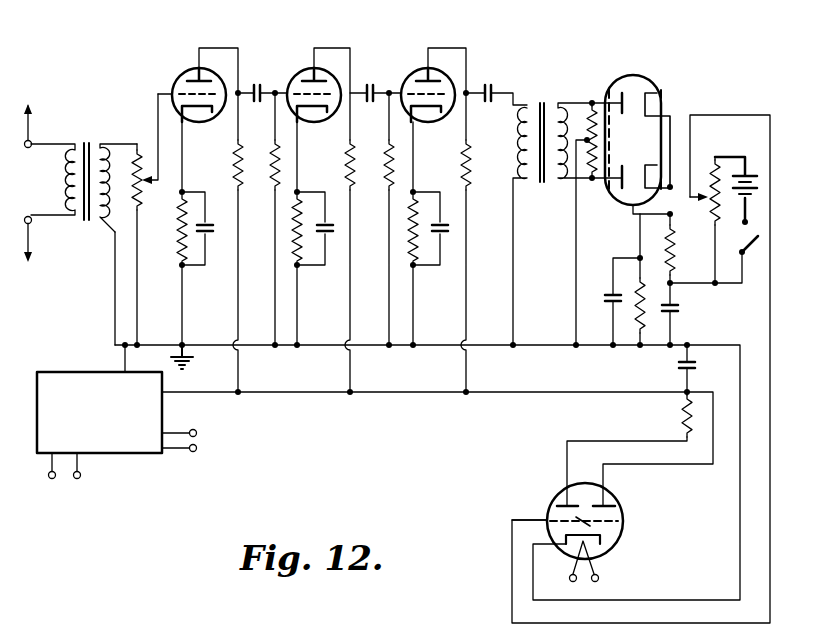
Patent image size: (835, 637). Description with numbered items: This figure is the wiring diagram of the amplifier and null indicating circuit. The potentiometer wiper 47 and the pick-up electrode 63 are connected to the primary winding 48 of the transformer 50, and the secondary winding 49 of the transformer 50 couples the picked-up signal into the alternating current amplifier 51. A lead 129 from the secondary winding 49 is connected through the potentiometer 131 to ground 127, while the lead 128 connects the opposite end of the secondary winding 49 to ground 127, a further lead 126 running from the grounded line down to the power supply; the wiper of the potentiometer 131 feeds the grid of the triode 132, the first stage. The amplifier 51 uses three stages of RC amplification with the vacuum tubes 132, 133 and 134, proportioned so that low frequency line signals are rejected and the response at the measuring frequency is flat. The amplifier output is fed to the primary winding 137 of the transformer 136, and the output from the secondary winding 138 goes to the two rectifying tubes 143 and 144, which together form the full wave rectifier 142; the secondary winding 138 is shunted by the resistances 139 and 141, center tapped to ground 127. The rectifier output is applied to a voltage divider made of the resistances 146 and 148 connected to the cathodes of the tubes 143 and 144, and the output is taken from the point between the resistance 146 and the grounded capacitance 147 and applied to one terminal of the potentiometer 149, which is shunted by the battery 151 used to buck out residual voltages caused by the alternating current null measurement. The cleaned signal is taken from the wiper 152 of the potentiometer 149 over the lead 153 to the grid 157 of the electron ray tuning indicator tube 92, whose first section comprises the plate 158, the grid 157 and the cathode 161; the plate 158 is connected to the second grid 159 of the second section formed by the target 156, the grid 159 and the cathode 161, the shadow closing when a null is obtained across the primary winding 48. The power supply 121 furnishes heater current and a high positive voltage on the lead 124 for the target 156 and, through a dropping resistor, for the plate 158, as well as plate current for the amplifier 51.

The potentiometer wiper 47 is at (30, 129).
The primary winding 48 is at (70, 176).
The secondary winding 49 is at (103, 222).
The transformer 50 is at (95, 124).
The alternating current amplifier 51 is at (257, 43).
The pick-up electrode 63 is at (32, 245).
The electron ray tuning indicator tube 92 is at (556, 482).
The power supply 121 is at (118, 464).
The lead 124 is at (210, 396).
The ground lead 126 is at (125, 359).
The ground 127 is at (193, 365).
The lead 128 is at (115, 313).
The lead 129 is at (111, 144).
The potentiometer 131 is at (139, 197).
The triode 132 is at (178, 81).
The vacuum tube 133 is at (308, 70).
The vacuum tube 134 is at (414, 70).
The transformer 136 is at (544, 96).
The primary winding 137 is at (520, 145).
The secondary winding 138 is at (564, 180).
The resistance 139 is at (609, 90).
The resistance 141 is at (601, 180).
The full wave rectifier 142 is at (658, 170).
The rectifying tube 143 is at (664, 104).
The rectifying tube 144 is at (632, 218).
The resistance 146 is at (674, 285).
The capacitance 147 is at (680, 310).
The resistance 148 is at (638, 335).
The potentiometer 149 is at (711, 161).
The battery 151 is at (747, 172).
The wiper 152 is at (696, 198).
The lead 153 is at (755, 116).
The target 156 is at (615, 503).
The grid 157 is at (522, 516).
The plate 158 is at (554, 504).
The grid 159 is at (622, 522).
The cathode 161 is at (603, 537).